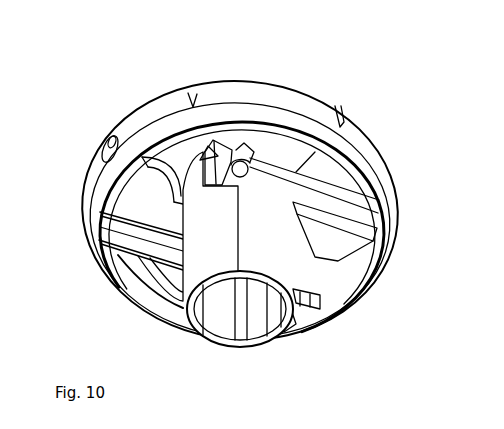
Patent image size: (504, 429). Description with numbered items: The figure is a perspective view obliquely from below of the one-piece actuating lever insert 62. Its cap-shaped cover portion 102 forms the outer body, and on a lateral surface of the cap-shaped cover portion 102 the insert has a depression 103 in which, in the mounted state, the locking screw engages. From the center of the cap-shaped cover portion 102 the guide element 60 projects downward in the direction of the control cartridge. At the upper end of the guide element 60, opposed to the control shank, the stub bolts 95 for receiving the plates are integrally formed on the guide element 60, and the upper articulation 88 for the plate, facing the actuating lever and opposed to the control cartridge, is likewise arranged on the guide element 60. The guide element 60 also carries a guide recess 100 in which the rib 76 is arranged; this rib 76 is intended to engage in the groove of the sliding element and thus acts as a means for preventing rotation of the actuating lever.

The guide element 60 is at (260, 238).
The actuating lever insert 62 is at (240, 95).
The rib 76 is at (286, 326).
The upper articulation 88 is at (200, 150).
The stub bolts 95 is at (233, 143).
The guide recess 100 is at (228, 319).
The cap-shaped cover portion 102 is at (86, 173).
The depression 103 is at (108, 143).